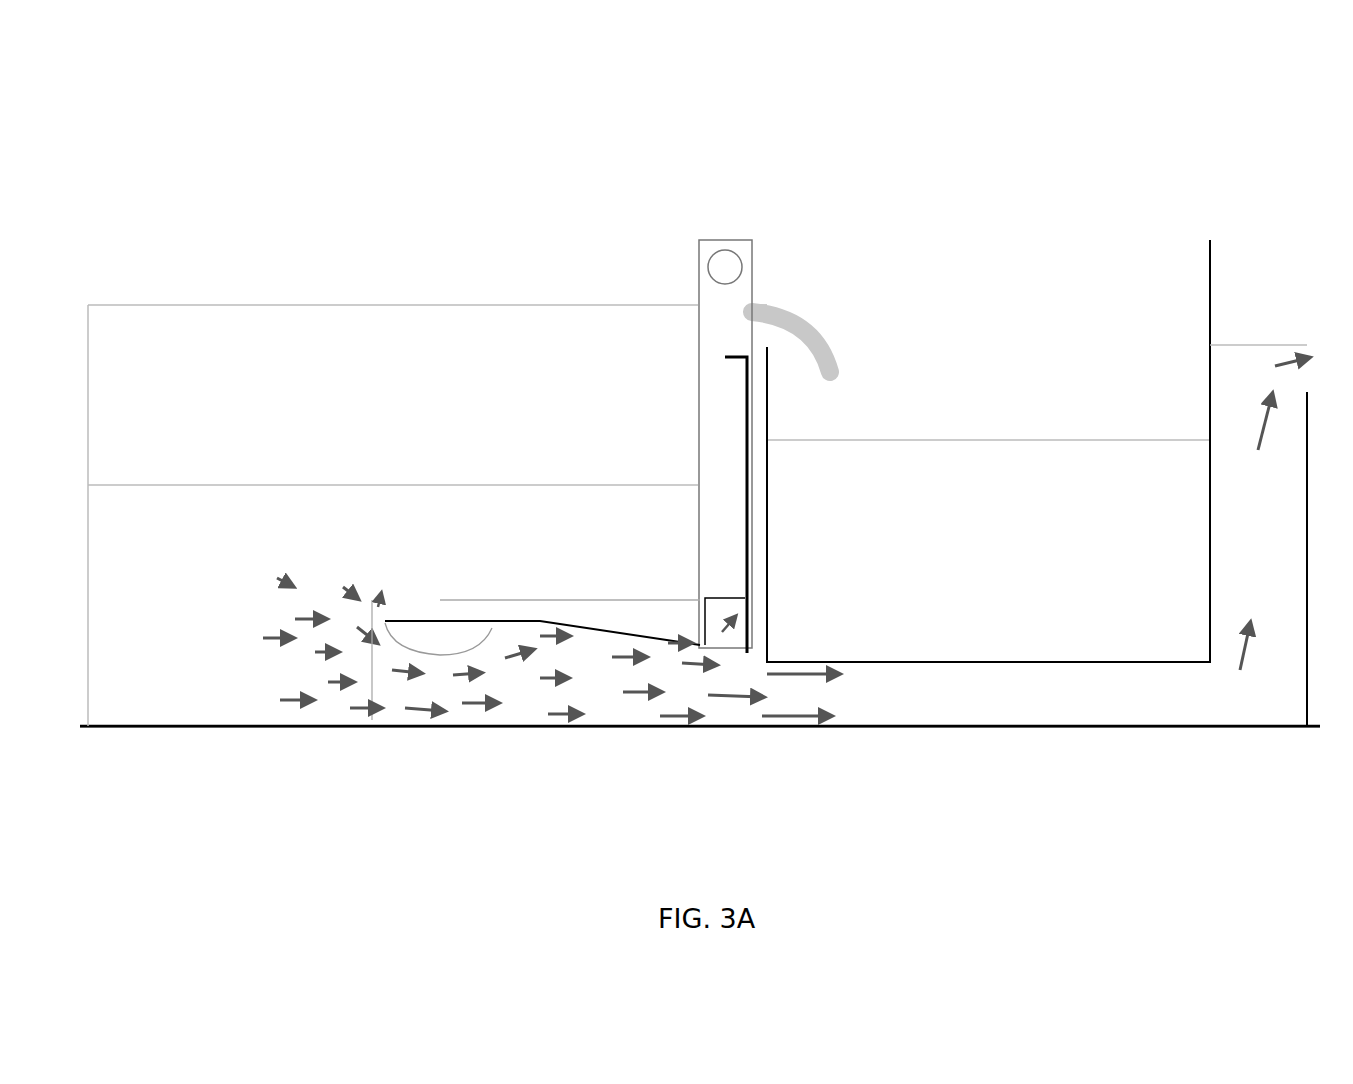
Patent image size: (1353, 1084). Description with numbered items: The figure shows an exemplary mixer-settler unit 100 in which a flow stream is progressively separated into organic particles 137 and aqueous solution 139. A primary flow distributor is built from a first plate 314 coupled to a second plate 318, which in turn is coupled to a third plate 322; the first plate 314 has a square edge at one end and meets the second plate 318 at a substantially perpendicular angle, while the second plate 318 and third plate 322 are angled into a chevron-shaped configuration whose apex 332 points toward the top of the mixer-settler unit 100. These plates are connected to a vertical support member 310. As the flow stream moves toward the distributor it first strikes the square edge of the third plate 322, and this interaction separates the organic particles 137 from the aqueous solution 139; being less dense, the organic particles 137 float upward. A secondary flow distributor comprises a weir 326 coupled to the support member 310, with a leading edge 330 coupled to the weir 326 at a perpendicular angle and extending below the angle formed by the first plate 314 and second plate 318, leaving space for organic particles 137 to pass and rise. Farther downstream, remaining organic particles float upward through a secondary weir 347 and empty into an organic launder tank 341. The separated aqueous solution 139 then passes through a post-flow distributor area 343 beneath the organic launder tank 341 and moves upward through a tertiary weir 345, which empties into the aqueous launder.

The mixer-settler unit 100 is at (372, 160).
The organic particles 137 is at (275, 577).
The aqueous solution 139 is at (363, 533).
The vertical support member 310 is at (700, 481).
The first plate 314 is at (703, 612).
The second plate 318 is at (598, 626).
The third plate 322 is at (458, 622).
The weir 326 is at (748, 518).
The leading edge 330 is at (720, 655).
The apex 332 is at (540, 620).
The organic launder tank 341 is at (1020, 660).
The post-flow distributor area 343 is at (1058, 727).
The tertiary weir 345 is at (1240, 556).
The secondary weir 347 is at (760, 556).